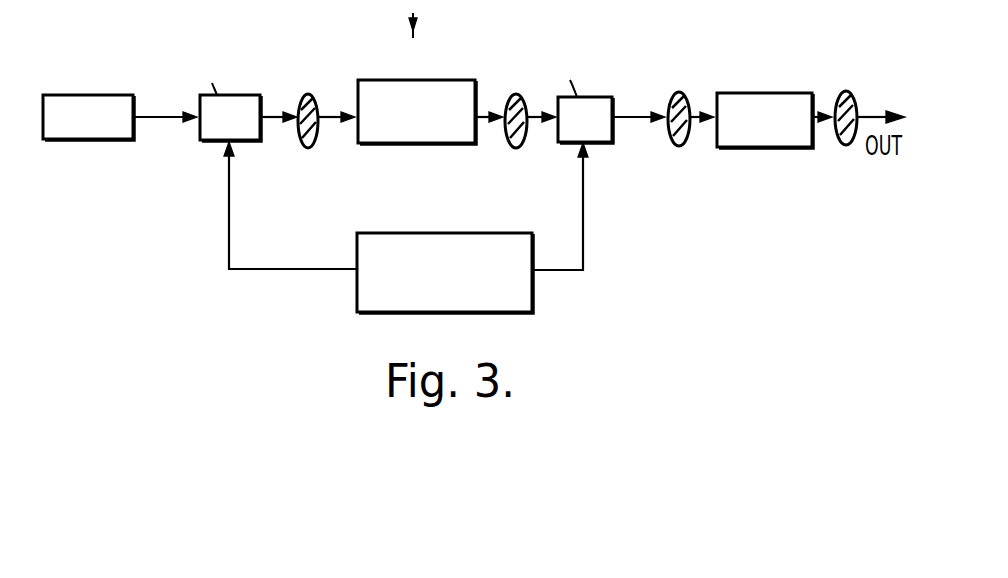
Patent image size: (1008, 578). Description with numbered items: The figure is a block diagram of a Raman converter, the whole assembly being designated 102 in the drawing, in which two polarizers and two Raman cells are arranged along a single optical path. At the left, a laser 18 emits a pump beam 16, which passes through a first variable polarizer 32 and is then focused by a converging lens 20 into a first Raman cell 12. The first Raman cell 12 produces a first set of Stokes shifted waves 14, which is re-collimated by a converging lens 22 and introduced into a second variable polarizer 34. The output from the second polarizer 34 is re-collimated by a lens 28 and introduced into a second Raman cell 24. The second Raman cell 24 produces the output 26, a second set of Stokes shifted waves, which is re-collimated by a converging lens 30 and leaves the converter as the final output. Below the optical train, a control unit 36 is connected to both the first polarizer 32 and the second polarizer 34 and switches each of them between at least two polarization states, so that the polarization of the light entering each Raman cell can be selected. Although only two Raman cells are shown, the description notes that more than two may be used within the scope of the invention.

The laser 18 is at (87, 93).
The pump beam 16 is at (155, 119).
The first variable polarizer 32 is at (257, 141).
The converging lens 20 is at (315, 136).
The first Raman cell 12 is at (455, 143).
The pump input arrow 102 is at (417, 19).
The first set of Stokes shifted waves 14 is at (482, 115).
The converging lens 22 is at (524, 139).
The second variable polarizer 34 is at (610, 142).
The lens 28 is at (687, 137).
The second Raman cell 24 is at (762, 147).
The output 26 is at (820, 112).
The converging lens 30 is at (856, 97).
The control unit 36 is at (532, 306).